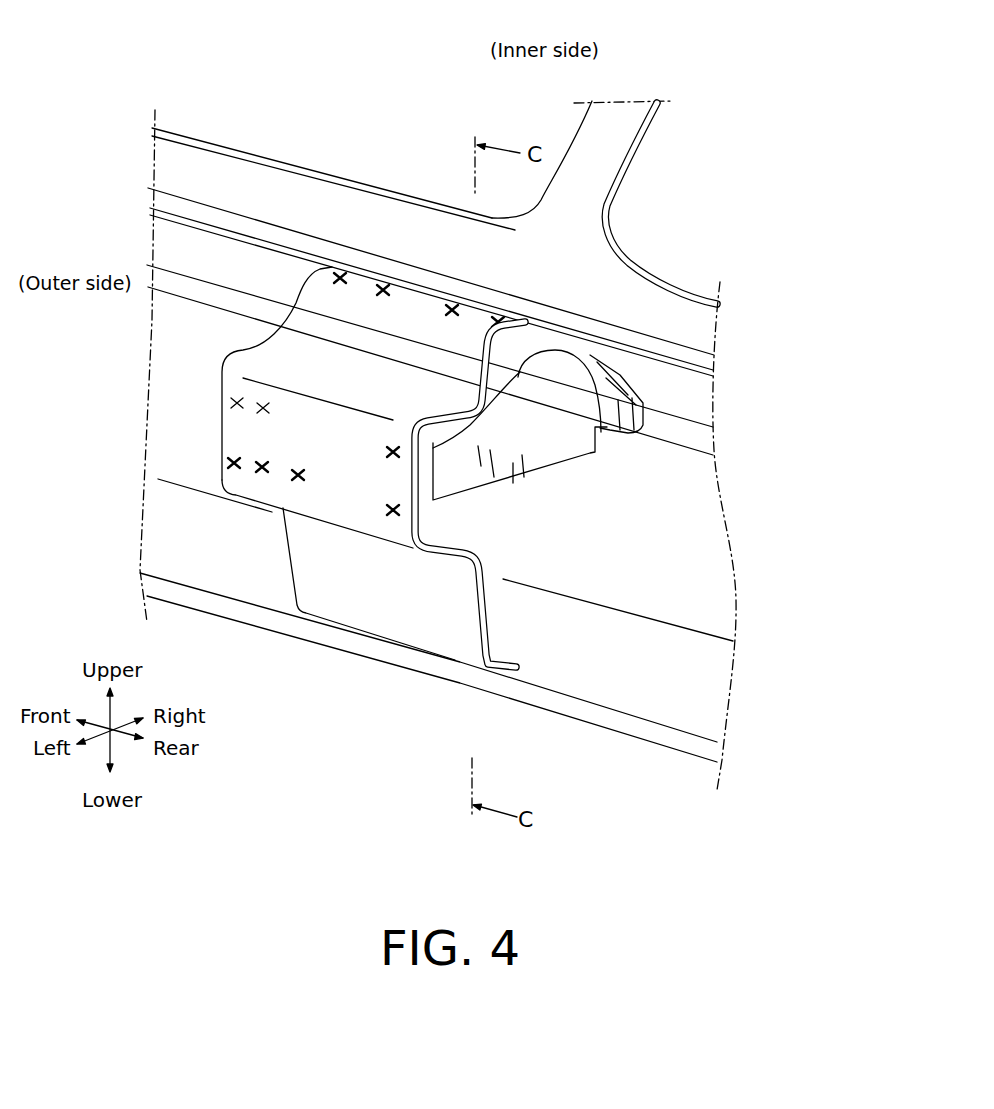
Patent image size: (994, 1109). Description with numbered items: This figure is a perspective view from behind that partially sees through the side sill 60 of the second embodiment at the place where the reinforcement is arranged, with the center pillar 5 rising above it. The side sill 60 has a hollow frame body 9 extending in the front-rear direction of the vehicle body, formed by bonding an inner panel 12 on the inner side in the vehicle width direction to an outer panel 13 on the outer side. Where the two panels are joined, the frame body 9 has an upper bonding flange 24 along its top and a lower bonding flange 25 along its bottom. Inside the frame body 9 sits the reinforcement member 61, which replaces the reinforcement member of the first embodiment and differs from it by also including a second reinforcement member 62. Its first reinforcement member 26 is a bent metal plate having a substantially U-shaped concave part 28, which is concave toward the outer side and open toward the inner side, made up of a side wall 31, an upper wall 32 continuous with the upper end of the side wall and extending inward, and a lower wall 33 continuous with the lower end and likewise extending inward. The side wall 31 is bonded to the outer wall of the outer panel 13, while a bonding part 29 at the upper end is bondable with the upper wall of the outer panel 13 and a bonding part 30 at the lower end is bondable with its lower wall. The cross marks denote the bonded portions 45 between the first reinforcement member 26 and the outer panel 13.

The center pillar 5 is at (620, 135).
The frame body 9 is at (431, 271).
The inner panel 12 is at (653, 548).
The outer panel 13 is at (187, 287).
The bonding flange 24 is at (228, 163).
The bonding flange 25 is at (243, 626).
The first reinforcement member 26 is at (421, 298).
The concave part 28 is at (243, 389).
The bonding part 29 is at (323, 293).
The bonding part 30 is at (507, 653).
The side wall 31 is at (232, 428).
The upper wall 32 is at (297, 378).
The lower wall 33 is at (247, 505).
The bonded portions 45 is at (383, 290).
The side sill 60 is at (153, 93).
The reinforcement member 61 is at (526, 286).
The second reinforcement member 62 is at (546, 340).